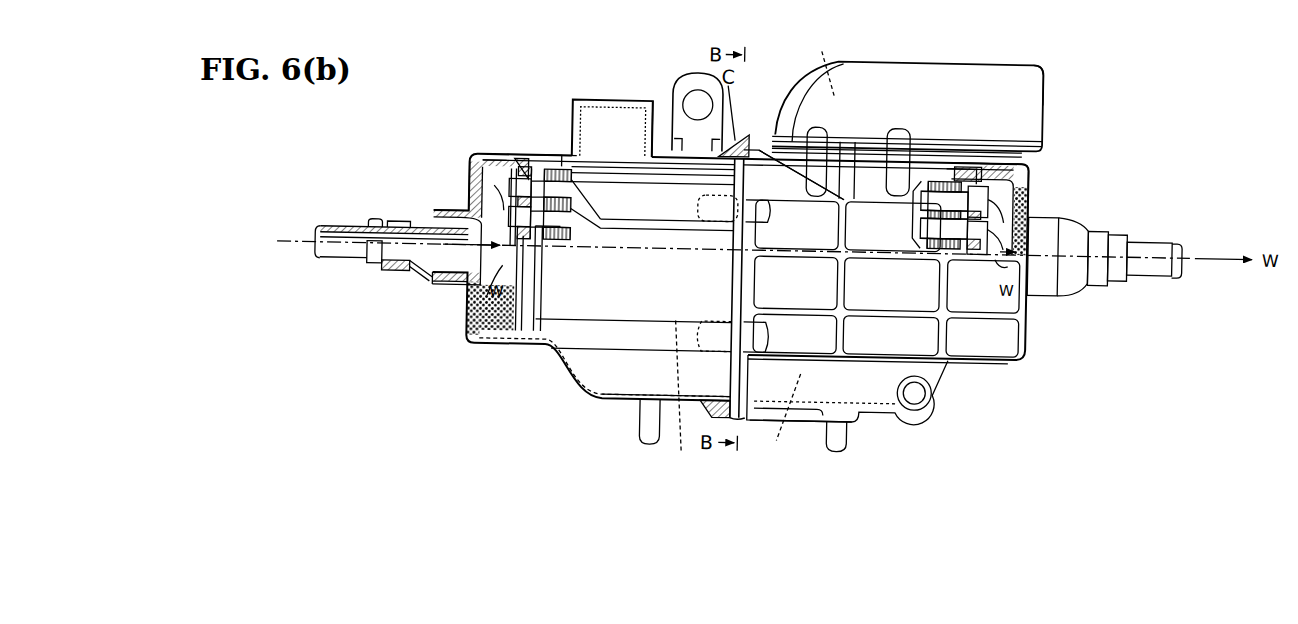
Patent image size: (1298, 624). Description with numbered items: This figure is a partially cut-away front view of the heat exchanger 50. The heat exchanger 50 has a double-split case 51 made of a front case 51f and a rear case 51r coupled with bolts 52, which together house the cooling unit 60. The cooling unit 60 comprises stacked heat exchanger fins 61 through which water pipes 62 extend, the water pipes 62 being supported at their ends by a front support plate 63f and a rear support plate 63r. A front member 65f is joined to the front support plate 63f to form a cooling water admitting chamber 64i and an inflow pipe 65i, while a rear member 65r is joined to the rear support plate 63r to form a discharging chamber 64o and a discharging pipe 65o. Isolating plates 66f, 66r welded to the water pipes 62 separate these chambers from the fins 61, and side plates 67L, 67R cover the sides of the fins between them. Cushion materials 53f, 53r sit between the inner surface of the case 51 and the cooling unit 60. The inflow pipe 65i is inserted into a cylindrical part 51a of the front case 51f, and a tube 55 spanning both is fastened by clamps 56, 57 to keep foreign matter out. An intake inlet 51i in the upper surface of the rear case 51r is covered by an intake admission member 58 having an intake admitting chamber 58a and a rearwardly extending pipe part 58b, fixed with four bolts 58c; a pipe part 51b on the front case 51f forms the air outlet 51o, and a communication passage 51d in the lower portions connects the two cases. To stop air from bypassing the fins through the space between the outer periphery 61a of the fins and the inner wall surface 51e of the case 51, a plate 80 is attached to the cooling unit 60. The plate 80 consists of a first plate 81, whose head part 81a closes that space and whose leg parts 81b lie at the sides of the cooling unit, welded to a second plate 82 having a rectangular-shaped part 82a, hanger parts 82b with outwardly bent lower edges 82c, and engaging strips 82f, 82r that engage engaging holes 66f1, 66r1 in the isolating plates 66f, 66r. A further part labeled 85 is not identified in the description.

The heat exchanger 50 is at (1070, 74).
The case 51 is at (473, 350).
The cylindrical part 51a is at (420, 290).
The pipe part 51b is at (648, 149).
The communication passage 51d is at (770, 409).
The inner wall surface 51e is at (742, 144).
The front case 51f is at (518, 352).
The intake inlet 51i is at (775, 135).
The outlet 51o is at (608, 116).
The rear case 51r is at (958, 340).
The bolts 52 is at (770, 210).
The front cushion material 53f is at (468, 192).
The rear cushion material 53r is at (1028, 162).
The tube 55 is at (405, 280).
The clamp 56 is at (452, 294).
The clamp 57 is at (375, 272).
The intake admission member 58 is at (798, 82).
The intake admitting chamber 58a is at (819, 62).
The pipe part 58b is at (1025, 67).
The bolts 58c is at (893, 124).
The cooling unit 60 is at (631, 336).
The heat exchanger fins 61 is at (560, 243).
The outer periphery 61a is at (840, 193).
The water pipes 62 is at (560, 228).
The front support plate 63f is at (510, 166).
The rear support plate 63r is at (985, 162).
The cooling water admitting chamber 64i is at (468, 203).
The cooling water discharging chamber 64o is at (1004, 160).
The cooling water inflow pipe 65i is at (342, 234).
The cooling water discharging pipe 65o is at (1150, 236).
The front member 65f is at (477, 185).
The rear member 65r is at (1028, 179).
The front isolating plate 66f is at (543, 171).
The engaging hole 66f1 is at (517, 161).
The rear isolating plate 66r is at (975, 252).
The engaging hole 66r1 is at (967, 163).
The left side plate 67L is at (650, 318).
The right side plate 67R is at (757, 400).
The plate 80 is at (728, 308).
The first plate 81 is at (700, 293).
The head part 81a is at (720, 145).
The leg part 81b is at (757, 410).
The second plate 82 is at (613, 176).
The rectangular-shaped part 82a is at (647, 179).
The hanger part 82b is at (692, 219).
The lower edge 82c is at (653, 232).
The front engaging strip 82f is at (515, 173).
The rear engaging strip 82r is at (965, 160).
The gasket 85 is at (556, 159).